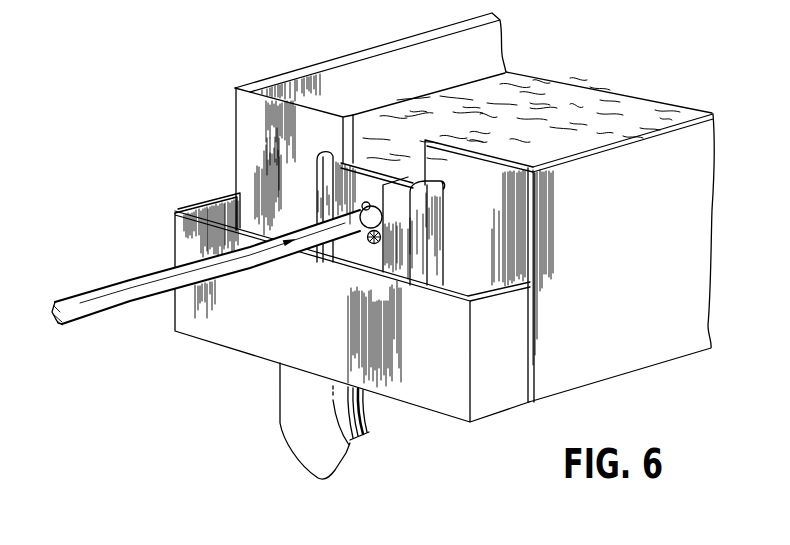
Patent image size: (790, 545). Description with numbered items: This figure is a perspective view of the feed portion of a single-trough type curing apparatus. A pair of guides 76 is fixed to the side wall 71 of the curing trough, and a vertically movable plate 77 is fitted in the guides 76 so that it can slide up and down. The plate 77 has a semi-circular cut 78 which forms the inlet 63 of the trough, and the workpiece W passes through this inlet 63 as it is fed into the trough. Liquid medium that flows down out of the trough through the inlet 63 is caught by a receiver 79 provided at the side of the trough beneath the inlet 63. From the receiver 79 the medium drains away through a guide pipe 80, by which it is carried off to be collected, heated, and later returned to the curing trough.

The side walls 71 is at (257, 135).
The guide clips 76 is at (325, 182).
The plate 77 is at (397, 258).
The rollers 78 is at (368, 207).
The wire feed end 63 is at (379, 243).
The front panel 79 is at (268, 338).
The bag 80 is at (295, 417).
The wire W is at (128, 289).